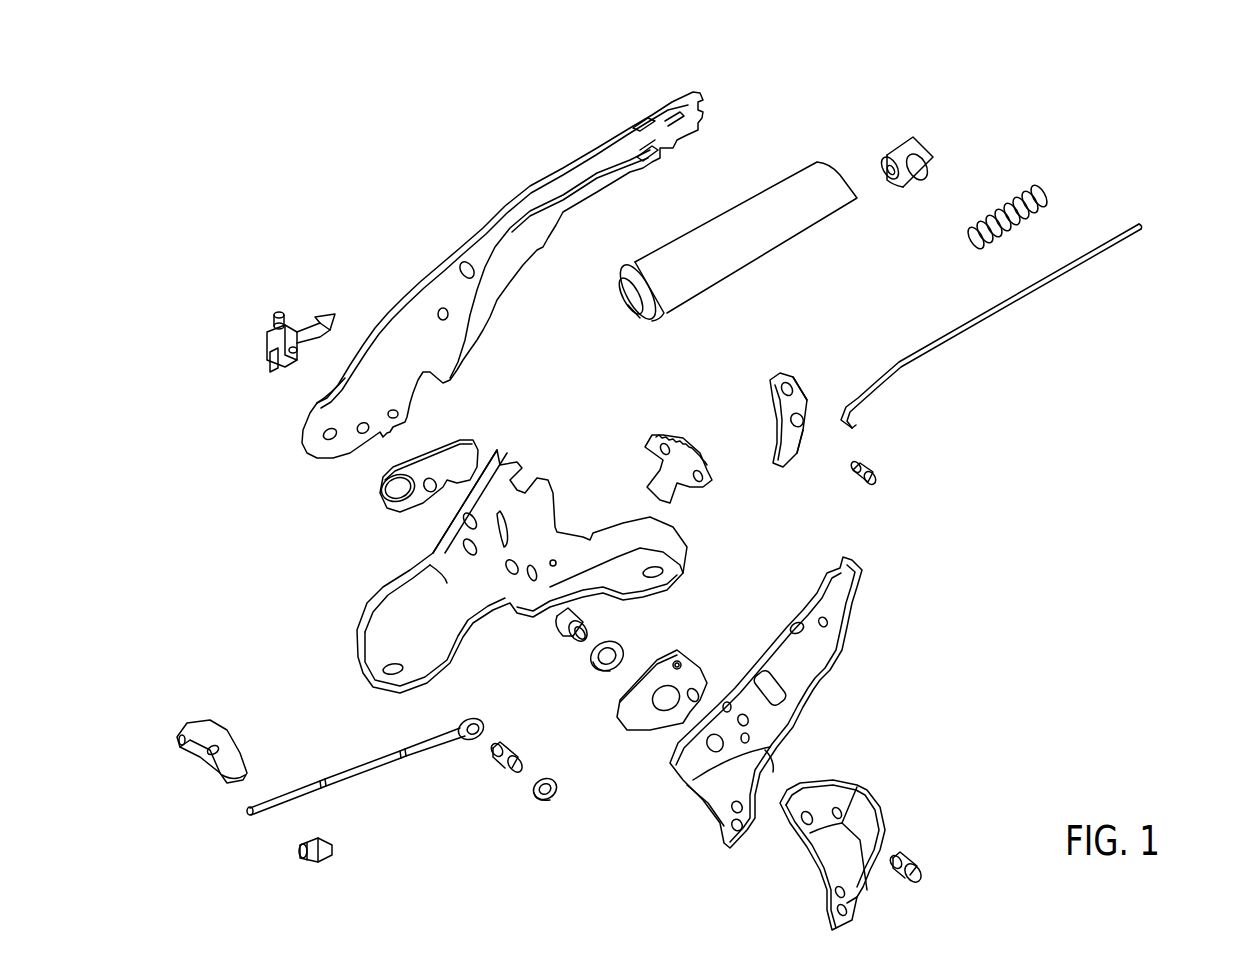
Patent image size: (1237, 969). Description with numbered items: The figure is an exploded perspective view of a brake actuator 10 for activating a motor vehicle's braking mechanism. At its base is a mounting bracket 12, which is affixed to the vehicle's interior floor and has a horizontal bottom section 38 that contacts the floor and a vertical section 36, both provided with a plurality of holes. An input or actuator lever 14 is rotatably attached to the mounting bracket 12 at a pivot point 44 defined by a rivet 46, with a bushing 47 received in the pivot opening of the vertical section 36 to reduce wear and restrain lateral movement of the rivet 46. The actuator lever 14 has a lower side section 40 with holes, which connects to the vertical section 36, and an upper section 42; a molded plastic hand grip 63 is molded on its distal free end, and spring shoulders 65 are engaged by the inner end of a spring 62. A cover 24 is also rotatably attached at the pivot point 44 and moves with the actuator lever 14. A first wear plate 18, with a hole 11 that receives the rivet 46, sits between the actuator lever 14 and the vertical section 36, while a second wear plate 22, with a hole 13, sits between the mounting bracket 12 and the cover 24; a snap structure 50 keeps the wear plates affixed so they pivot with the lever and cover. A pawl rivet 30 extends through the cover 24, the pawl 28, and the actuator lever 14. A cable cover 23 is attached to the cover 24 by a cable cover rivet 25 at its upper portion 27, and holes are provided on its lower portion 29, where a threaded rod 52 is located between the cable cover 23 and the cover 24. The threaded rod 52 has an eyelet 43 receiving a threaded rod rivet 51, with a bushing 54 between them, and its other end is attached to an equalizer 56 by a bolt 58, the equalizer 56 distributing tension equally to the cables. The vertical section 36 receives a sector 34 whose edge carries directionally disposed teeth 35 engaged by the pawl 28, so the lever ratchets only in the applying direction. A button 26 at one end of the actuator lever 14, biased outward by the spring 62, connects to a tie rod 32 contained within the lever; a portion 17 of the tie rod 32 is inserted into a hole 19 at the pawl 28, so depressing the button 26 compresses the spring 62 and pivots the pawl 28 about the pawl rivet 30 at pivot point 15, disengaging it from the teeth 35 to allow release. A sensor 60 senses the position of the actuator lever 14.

The brake actuator 10 is at (1018, 126).
The hole 11 is at (392, 490).
The mounting bracket 12 is at (543, 571).
The hole 13 is at (660, 707).
The actuator lever 14 is at (598, 160).
The pivot point 15 is at (804, 414).
The portion of the tie rod 17 is at (855, 414).
The first wear plate 18 is at (462, 445).
The hole 19 is at (783, 381).
The second wear plate 22 is at (697, 676).
The cable cover 23 is at (862, 818).
The cover 24 is at (830, 610).
The cable cover rivet 25 is at (913, 860).
The button 26 is at (918, 160).
The upper portion 27 is at (848, 795).
The pawl 28 is at (799, 395).
The lower portion 29 is at (830, 912).
The pawl rivet 30 is at (876, 478).
The tie rod 32 is at (1062, 276).
The sector 34 is at (683, 457).
The teeth 35 is at (692, 444).
The vertical section 36 is at (447, 570).
The horizontal bottom section 38 is at (683, 567).
The lower side section 40 is at (317, 440).
The upper section 42 is at (494, 301).
The eyelet 43 is at (478, 735).
The pivot point 44 is at (462, 547).
The rivet 46 is at (564, 629).
The bushing 47 is at (615, 646).
The snap structure 50 is at (670, 670).
The threaded rod rivet 51 is at (506, 762).
The threaded rod 52 is at (360, 764).
The bushing 54 is at (557, 794).
The equalizer 56 is at (204, 730).
The bolt 58 is at (330, 843).
The sensor 60 is at (290, 320).
The spring 62 is at (1035, 195).
The hand grip 63 is at (800, 180).
The spring shoulders 65 is at (648, 144).